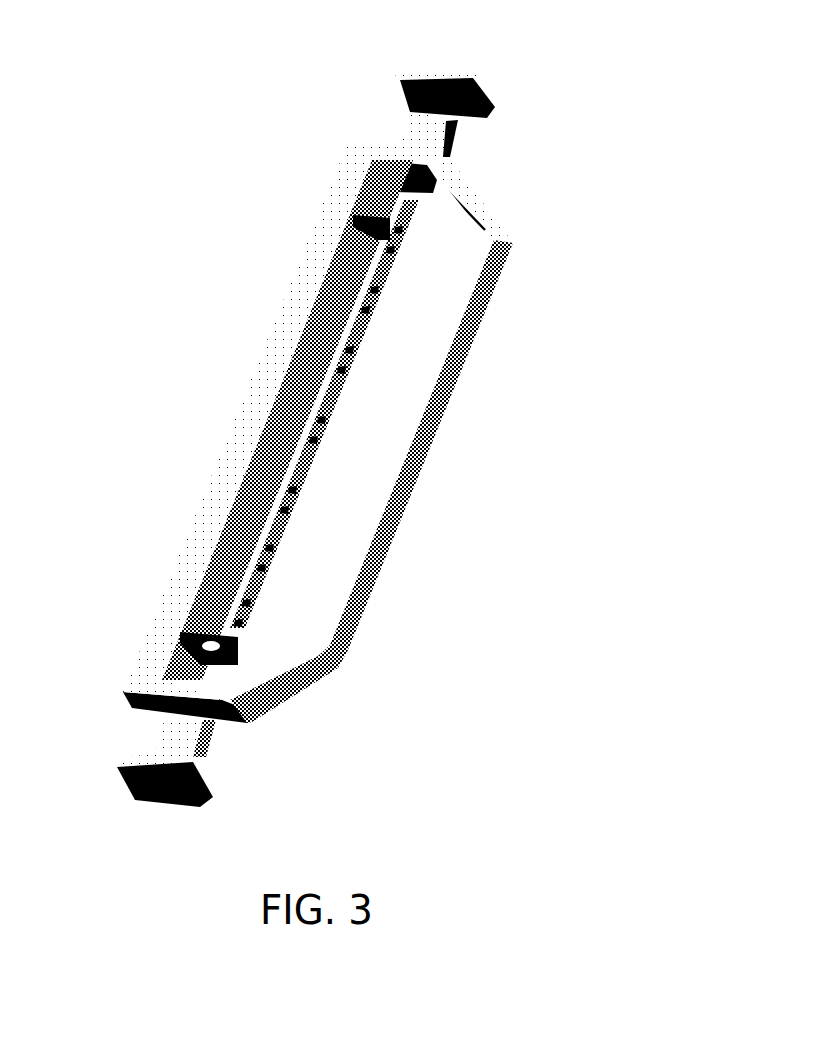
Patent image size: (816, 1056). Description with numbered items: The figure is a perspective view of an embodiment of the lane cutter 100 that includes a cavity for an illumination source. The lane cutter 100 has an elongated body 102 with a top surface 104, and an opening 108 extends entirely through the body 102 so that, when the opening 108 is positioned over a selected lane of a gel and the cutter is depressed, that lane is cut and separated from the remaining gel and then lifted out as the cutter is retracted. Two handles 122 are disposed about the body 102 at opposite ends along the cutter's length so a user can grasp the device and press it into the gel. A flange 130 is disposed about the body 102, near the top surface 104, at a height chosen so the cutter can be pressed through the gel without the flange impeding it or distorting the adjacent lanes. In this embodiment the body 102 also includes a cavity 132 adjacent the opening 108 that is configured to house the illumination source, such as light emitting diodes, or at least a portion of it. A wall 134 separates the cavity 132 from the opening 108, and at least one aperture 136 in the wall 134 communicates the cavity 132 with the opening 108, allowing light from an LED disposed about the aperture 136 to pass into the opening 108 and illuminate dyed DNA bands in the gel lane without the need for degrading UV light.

The lane cutter 100 is at (165, 127).
The body 102 is at (333, 174).
The top surface 104 is at (267, 380).
The opening 108 is at (237, 540).
The handle 122 is at (498, 90).
The flange 130 is at (443, 420).
The cavity 132 is at (170, 660).
The wall 134 is at (265, 568).
The aperture 136 is at (367, 350).